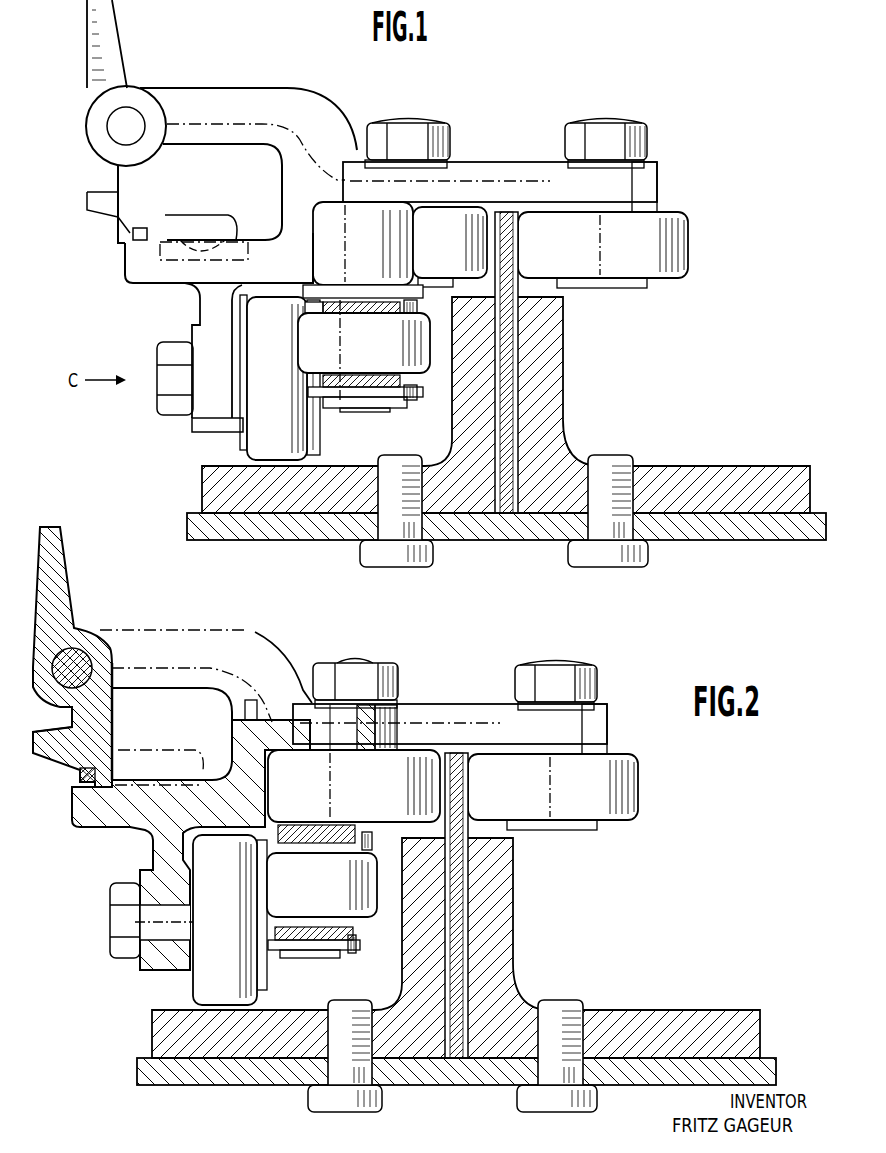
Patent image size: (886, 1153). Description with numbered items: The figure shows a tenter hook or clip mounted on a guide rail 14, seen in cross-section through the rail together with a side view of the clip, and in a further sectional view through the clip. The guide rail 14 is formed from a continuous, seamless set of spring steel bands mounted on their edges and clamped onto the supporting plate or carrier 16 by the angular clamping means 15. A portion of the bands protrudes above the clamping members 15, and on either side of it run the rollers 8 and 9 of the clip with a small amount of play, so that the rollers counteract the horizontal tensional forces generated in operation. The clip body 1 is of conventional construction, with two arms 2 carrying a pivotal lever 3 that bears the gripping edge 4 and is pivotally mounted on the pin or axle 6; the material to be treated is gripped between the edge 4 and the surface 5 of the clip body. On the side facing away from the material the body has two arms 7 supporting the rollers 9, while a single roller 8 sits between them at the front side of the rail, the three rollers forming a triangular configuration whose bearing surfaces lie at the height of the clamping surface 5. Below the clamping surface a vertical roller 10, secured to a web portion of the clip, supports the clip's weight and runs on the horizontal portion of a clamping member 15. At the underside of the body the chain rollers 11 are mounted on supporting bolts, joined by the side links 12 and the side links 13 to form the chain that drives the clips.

In FIG. 1, the clamp body 1 is at (290, 195).
In FIG. 2, the clamp body 1 is at (222, 735).
In FIG. 1, the arms 2 is at (220, 95).
In FIG. 2, the arms 2 is at (163, 638).
In FIG. 1, the pivotal lever 3 is at (123, 217).
In FIG. 2, the pivotal lever 3 is at (53, 765).
In FIG. 1, the gripping edge 4 is at (133, 235).
In FIG. 2, the gripping edge 4 is at (80, 778).
In FIG. 1, the surface 5 is at (147, 283).
In FIG. 2, the surface 5 is at (95, 825).
In FIG. 1, the pin or axle 6 is at (112, 128).
In FIG. 2, the pin or axle 6 is at (53, 695).
In FIG. 1, the arms 7 is at (518, 170).
In FIG. 2, the arms 7 is at (450, 707).
In FIG. 1, the roller 8 is at (463, 217).
In FIG. 2, the roller 8 is at (417, 752).
In FIG. 1, the rollers 9 is at (673, 245).
In FIG. 2, the rollers 9 is at (570, 792).
In FIG. 1, the vertical roller 10 is at (265, 440).
In FIG. 2, the vertical roller 10 is at (213, 977).
In FIG. 1, the rollers 11 is at (315, 350).
In FIG. 2, the rollers 11 is at (310, 897).
In FIG. 1, the side links 12 is at (423, 297).
In FIG. 2, the side links 12 is at (370, 843).
In FIG. 1, the side links 13 is at (330, 308).
In FIG. 2, the side links 13 is at (277, 853).
In FIG. 1, the guide rail 14 is at (513, 410).
In FIG. 2, the guide rail 14 is at (462, 904).
In FIG. 1, the angular clamping means 15 is at (537, 510).
In FIG. 2, the angular clamping means 15 is at (468, 1050).
In FIG. 1, the supporting plate or carrier 16 is at (693, 540).
In FIG. 2, the supporting plate or carrier 16 is at (260, 1082).